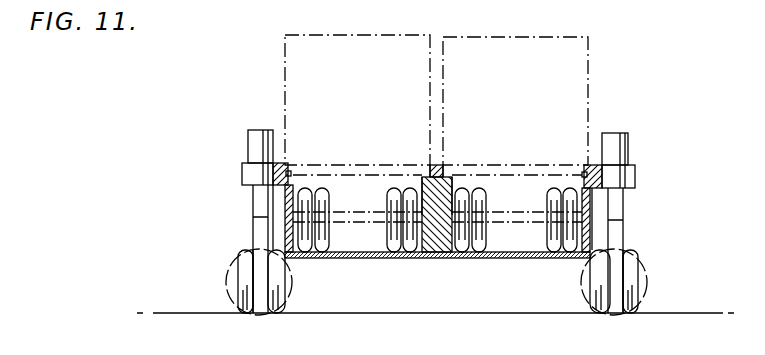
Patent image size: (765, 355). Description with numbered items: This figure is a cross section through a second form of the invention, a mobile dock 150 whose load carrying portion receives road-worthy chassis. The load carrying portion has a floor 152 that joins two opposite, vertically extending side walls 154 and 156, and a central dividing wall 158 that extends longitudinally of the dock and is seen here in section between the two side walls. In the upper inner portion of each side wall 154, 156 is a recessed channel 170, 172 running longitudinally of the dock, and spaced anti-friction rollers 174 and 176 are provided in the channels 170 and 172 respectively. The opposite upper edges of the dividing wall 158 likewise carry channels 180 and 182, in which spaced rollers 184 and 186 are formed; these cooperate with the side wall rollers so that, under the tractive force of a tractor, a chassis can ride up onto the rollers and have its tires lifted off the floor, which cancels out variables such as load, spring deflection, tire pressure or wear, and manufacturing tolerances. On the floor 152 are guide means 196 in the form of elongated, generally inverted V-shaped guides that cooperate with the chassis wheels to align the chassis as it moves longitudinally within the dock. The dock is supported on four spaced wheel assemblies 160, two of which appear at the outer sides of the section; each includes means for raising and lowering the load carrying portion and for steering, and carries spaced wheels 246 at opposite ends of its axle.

The mobile dock 150 is at (618, 122).
The floor 152 is at (421, 259).
The side wall 154 is at (283, 209).
The side wall 156 is at (592, 212).
The central dividing wall 158 is at (452, 184).
The wheel assembly 160 is at (250, 230).
The recessed channel 170 is at (281, 172).
The recessed channel 172 is at (587, 172).
The roller 174 is at (290, 172).
The roller 176 is at (583, 178).
The channel 180 is at (429, 176).
The channel 182 is at (445, 176).
The roller 184 is at (426, 180).
The roller 186 is at (449, 180).
The guide means 196 is at (337, 250).
The wheel 246 is at (248, 280).